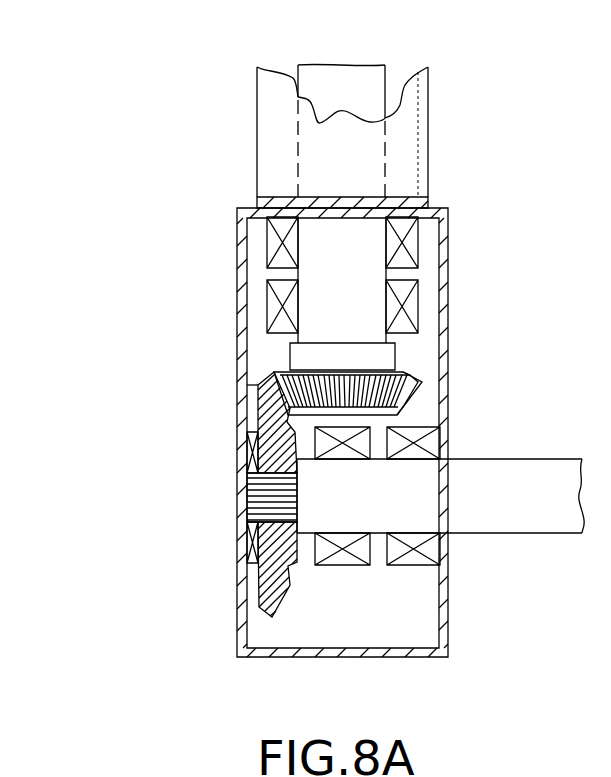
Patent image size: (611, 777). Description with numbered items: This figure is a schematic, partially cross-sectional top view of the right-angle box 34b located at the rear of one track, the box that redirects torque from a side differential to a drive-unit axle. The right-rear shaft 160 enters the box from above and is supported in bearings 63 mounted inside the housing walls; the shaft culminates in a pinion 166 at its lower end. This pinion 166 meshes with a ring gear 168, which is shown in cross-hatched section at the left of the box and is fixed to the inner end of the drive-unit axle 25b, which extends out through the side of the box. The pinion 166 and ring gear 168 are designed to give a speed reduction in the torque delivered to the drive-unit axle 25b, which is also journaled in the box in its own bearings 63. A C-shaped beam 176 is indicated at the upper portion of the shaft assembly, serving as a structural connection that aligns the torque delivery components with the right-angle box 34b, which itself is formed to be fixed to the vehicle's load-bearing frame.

The right-rear shaft 160 is at (364, 79).
The C-shaped beam 176 is at (405, 150).
The bearings 63 is at (408, 240).
The pinion 166 is at (390, 398).
The ring gear 168 is at (268, 596).
The drive-unit axle 25b is at (488, 515).
The right-angle box 34b is at (353, 657).